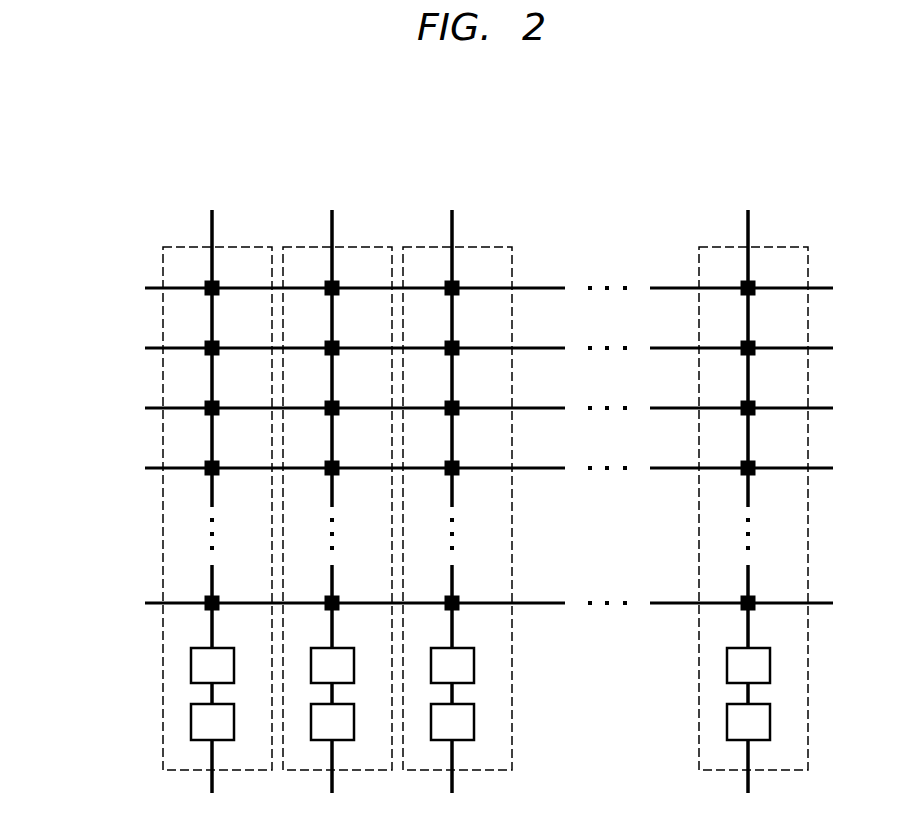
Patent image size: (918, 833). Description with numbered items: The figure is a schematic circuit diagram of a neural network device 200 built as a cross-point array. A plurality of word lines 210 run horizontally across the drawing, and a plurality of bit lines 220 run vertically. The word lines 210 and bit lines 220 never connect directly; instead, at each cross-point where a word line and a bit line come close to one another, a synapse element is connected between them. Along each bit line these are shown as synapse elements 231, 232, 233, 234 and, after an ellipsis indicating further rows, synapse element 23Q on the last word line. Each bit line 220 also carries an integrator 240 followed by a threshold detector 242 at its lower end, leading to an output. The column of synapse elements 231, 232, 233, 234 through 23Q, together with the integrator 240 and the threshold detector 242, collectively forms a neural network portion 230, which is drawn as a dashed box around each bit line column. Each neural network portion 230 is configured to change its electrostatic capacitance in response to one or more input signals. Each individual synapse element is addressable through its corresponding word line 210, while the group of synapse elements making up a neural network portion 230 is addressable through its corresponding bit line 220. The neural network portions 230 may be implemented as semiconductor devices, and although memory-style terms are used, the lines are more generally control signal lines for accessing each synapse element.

The neural network device 200 is at (497, 81).
The word lines 210 is at (105, 265).
The bit lines 220 is at (767, 165).
The neural network portion 230 is at (228, 246).
The synapse element 231 is at (220, 284).
The synapse element 232 is at (220, 344).
The synapse element 233 is at (220, 404).
The synapse element 234 is at (220, 464).
The synapse element 23Q is at (220, 599).
The integrator 240 is at (226, 648).
The threshold detector 242 is at (226, 740).